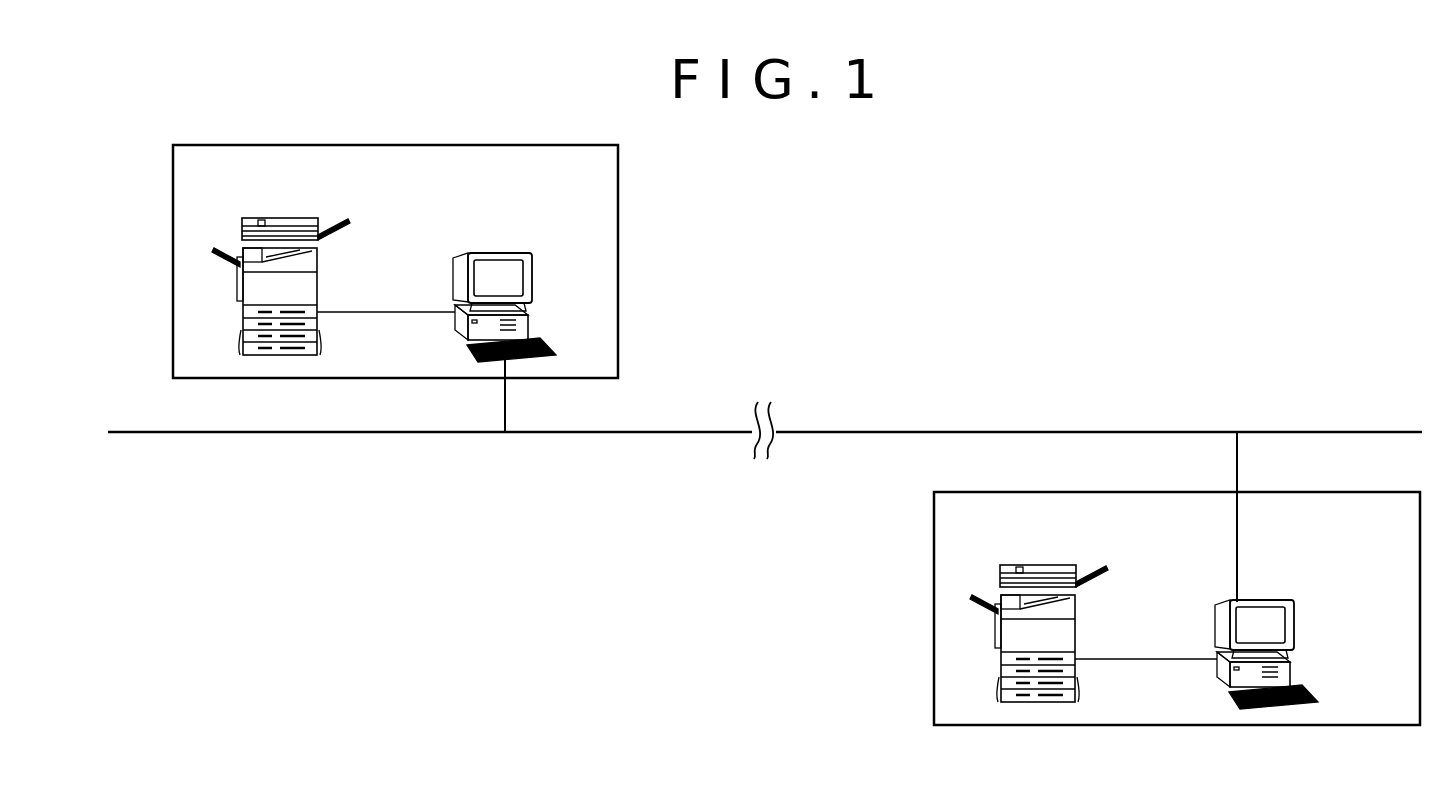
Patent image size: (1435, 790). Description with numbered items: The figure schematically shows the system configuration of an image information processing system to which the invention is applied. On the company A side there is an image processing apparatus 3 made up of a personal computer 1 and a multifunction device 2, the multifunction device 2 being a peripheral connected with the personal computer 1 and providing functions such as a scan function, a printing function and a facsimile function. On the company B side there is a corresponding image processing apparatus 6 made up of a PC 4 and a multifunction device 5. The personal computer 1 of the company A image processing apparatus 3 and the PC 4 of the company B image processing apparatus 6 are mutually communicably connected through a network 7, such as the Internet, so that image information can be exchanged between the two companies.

The personal computer 1 is at (557, 284).
The multifunction device 2 is at (283, 216).
The image processing apparatus 3 is at (384, 173).
The PC 4 is at (1316, 632).
The multifunction device 5 is at (1043, 566).
The image processing apparatus 6 is at (1133, 703).
The network 7 is at (945, 431).